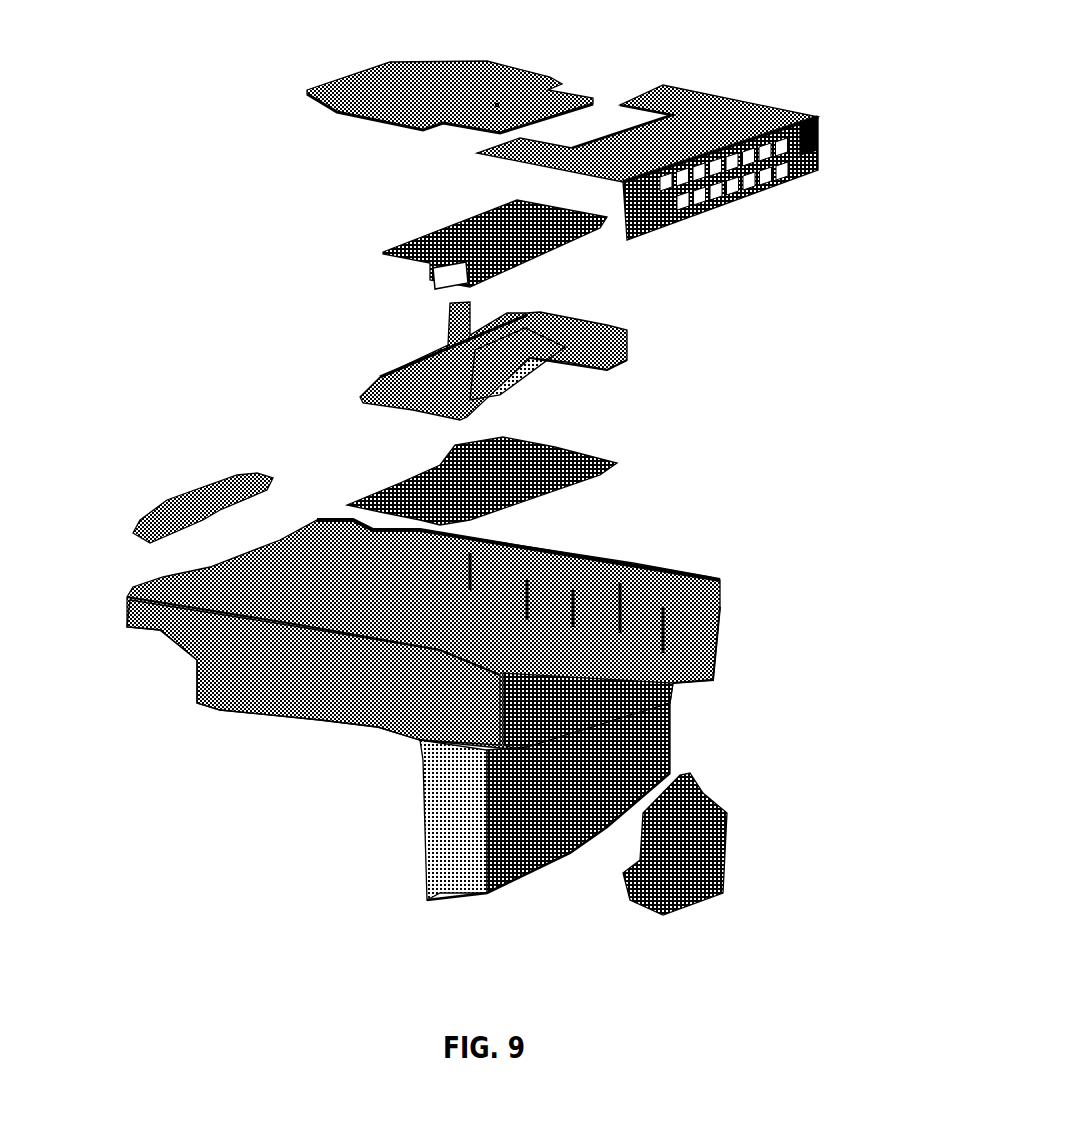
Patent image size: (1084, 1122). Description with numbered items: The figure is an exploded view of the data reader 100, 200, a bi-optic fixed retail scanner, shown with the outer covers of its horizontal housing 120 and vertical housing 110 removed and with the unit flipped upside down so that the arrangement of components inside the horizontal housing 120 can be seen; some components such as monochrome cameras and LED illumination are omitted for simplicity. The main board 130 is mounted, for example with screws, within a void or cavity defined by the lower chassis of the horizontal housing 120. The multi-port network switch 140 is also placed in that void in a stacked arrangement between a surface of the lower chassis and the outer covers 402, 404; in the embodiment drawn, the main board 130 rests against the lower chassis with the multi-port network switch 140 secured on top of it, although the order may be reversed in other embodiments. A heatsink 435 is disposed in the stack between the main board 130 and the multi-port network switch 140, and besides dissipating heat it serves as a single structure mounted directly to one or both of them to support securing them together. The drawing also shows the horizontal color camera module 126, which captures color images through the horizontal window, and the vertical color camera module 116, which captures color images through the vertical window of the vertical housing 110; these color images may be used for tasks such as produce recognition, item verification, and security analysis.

The data reader 100 is at (501, 463).
The data reader 200 is at (501, 463).
The outer cover 402 is at (537, 57).
The outer cover 404 is at (823, 147).
The multi-port network switch 140 is at (385, 262).
The heatsink 435 is at (627, 333).
The horizontal color camera module 126 is at (138, 512).
The main board 130 is at (600, 458).
The horizontal housing 120 is at (668, 568).
The vertical housing 110 is at (385, 827).
The vertical color camera module 116 is at (728, 788).